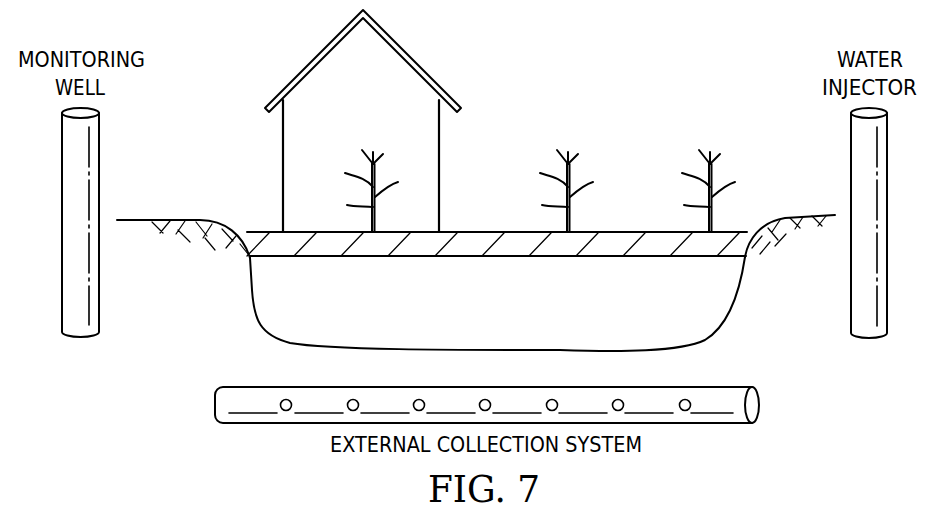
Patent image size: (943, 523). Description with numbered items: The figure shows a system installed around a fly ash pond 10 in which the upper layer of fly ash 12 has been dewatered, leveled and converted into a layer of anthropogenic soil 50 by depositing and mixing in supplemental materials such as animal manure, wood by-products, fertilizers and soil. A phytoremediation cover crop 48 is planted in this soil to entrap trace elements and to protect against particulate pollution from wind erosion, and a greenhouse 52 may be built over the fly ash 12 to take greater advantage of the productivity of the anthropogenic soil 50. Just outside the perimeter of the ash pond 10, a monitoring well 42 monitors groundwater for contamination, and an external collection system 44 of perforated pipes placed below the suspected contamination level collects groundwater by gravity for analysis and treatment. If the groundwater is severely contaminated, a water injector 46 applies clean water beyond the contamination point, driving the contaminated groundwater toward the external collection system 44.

The ash pond 10 is at (222, 189).
The fly ash 12 is at (727, 300).
The monitoring well 42 is at (100, 168).
The external collection system 44 is at (213, 398).
The water injector 46 is at (851, 165).
The phytoremediation cover crop 48 is at (713, 215).
The anthropogenic soil 50 is at (615, 242).
The greenhouse 52 is at (313, 60).